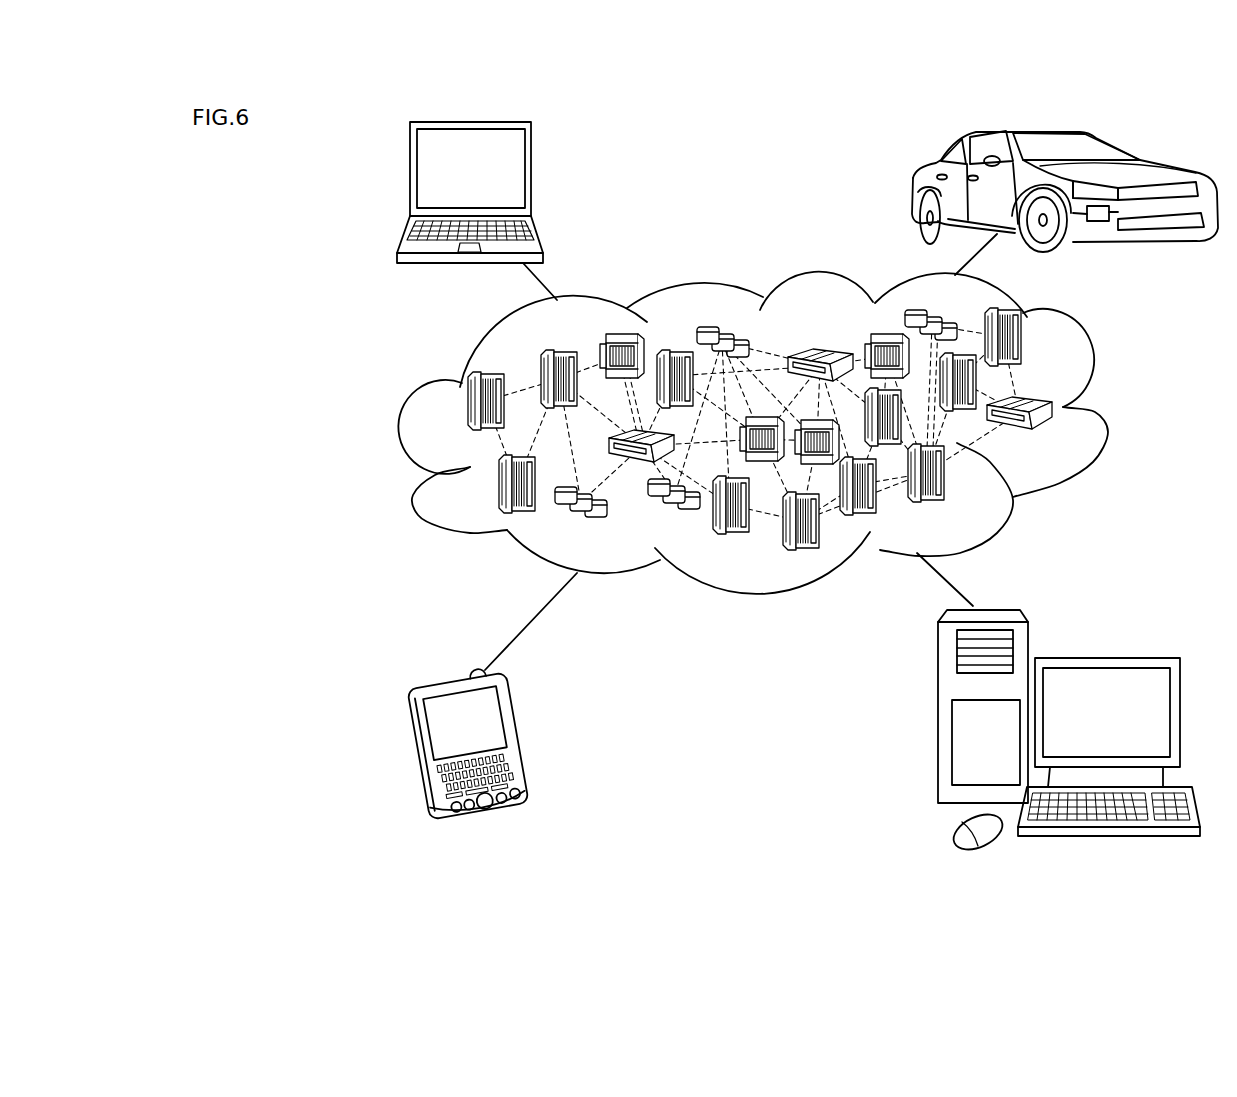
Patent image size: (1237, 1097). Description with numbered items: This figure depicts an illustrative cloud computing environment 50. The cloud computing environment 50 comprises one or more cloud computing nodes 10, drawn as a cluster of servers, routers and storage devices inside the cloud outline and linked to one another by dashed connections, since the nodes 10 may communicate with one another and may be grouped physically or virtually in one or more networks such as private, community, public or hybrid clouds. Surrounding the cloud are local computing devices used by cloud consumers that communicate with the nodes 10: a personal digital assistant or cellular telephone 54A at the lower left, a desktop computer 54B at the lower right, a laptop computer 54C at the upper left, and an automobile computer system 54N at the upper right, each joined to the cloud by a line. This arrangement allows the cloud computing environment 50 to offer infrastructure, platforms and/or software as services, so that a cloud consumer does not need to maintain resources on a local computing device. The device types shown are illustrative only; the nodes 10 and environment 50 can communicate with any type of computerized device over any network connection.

The cloud computing environment 50 is at (1108, 412).
The cloud computing node 10 is at (1068, 441).
The personal digital assistant or cellular telephone 54A is at (520, 740).
The desktop computer 54B is at (1107, 658).
The laptop computer 54C is at (531, 173).
The automobile computer system 54N is at (912, 192).